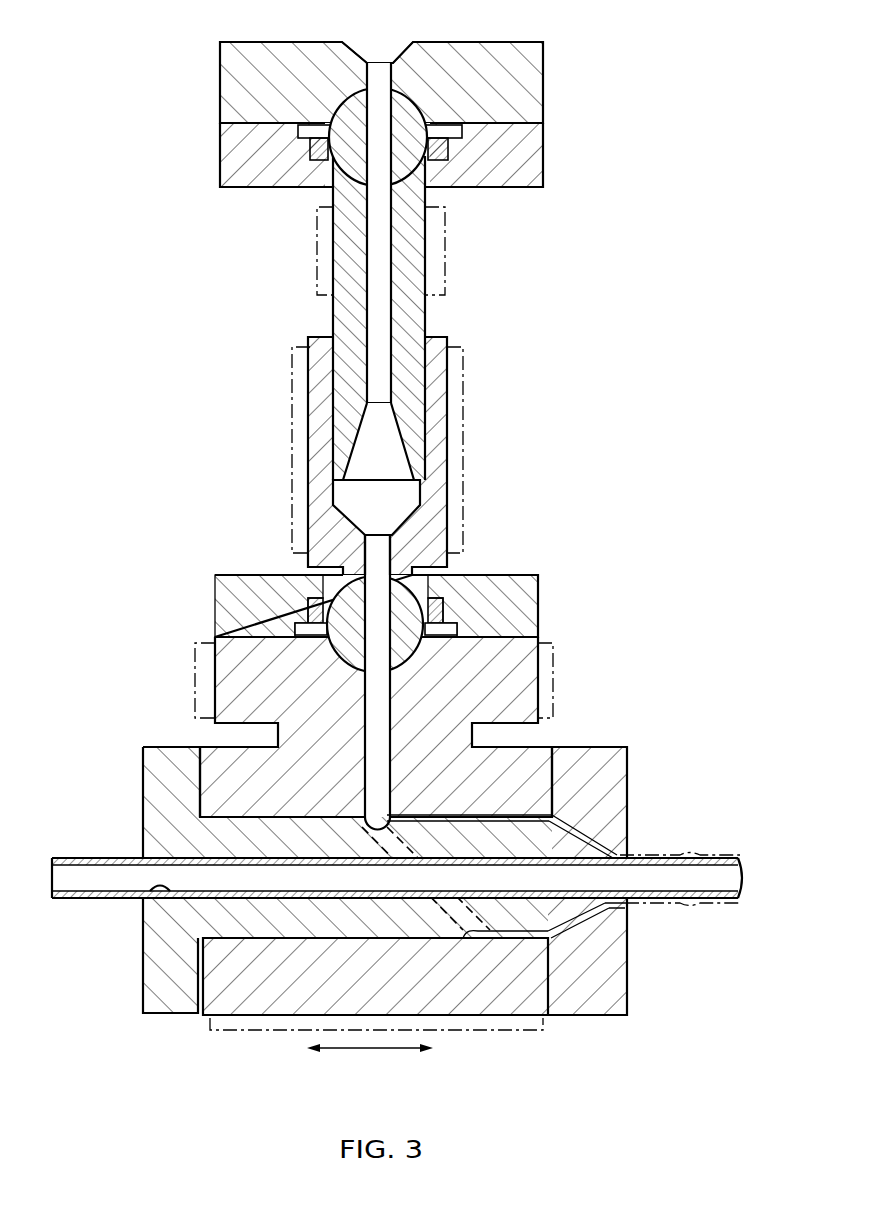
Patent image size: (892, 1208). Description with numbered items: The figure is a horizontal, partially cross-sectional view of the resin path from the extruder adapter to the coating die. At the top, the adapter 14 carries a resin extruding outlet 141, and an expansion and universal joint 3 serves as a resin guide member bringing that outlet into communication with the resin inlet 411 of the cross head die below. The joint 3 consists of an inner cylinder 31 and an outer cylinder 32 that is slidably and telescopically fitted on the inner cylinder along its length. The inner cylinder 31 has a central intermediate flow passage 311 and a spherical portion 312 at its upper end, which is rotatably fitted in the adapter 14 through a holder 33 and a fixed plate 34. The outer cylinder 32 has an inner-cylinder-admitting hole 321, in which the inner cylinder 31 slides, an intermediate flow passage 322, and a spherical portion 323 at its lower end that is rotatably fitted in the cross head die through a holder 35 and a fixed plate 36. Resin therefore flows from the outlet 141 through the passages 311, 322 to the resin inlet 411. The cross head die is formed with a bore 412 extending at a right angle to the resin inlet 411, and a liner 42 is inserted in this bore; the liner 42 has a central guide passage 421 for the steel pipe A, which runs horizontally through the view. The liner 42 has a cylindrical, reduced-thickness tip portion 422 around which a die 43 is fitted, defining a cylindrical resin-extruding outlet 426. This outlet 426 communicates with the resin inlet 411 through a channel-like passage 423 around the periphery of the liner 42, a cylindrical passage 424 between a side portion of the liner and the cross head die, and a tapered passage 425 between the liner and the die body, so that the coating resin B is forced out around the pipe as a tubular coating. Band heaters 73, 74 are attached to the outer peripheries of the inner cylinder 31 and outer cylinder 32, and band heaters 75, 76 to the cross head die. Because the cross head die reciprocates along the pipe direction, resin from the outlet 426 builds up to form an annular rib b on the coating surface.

The expansion and universal joint 3 is at (308, 317).
The adapter 14 is at (472, 50).
The resin extruding outlet 141 is at (375, 66).
The inner cylinder 31 is at (338, 252).
The intermediate flow passage 311 is at (392, 232).
The spherical portion 312 is at (340, 140).
The outer cylinder 32 is at (315, 412).
The inner-cylinder-admitting hole 321 is at (410, 497).
The intermediate flow passage 322 is at (372, 548).
The spherical portion 323 is at (416, 613).
The holder 33 is at (440, 155).
The fixed plate 34 is at (536, 150).
The holder 35 is at (315, 610).
The fixed plate 36 is at (530, 612).
The resin inlet 411 is at (382, 708).
The bore 412 is at (281, 837).
The liner 42 is at (281, 930).
The guide passage 421 is at (152, 893).
The tip portion 422 is at (612, 850).
The channel-like passage 423 is at (485, 938).
The cylindrical passage 424 is at (445, 816).
The tapered passage 425 is at (582, 923).
The cylindrical resin-extruding outlet 426 is at (613, 910).
The die 43 is at (620, 761).
The band heater 73 is at (447, 285).
The band heater 74 is at (466, 382).
The band heater 75 is at (558, 682).
The band heater 76 is at (268, 1035).
The steel pipe A is at (80, 858).
The coating resin B is at (715, 853).
The annular rib b is at (690, 853).